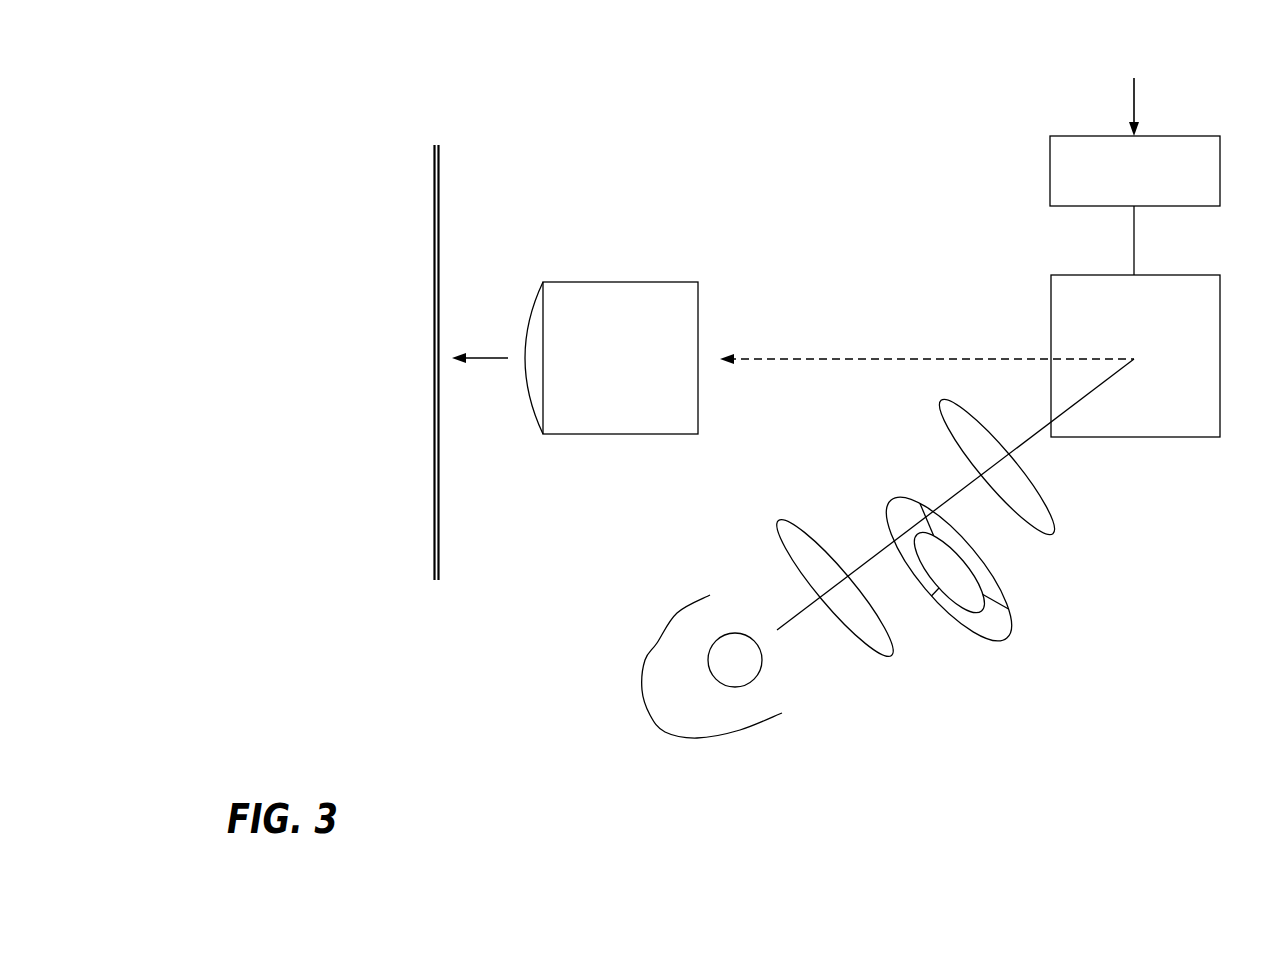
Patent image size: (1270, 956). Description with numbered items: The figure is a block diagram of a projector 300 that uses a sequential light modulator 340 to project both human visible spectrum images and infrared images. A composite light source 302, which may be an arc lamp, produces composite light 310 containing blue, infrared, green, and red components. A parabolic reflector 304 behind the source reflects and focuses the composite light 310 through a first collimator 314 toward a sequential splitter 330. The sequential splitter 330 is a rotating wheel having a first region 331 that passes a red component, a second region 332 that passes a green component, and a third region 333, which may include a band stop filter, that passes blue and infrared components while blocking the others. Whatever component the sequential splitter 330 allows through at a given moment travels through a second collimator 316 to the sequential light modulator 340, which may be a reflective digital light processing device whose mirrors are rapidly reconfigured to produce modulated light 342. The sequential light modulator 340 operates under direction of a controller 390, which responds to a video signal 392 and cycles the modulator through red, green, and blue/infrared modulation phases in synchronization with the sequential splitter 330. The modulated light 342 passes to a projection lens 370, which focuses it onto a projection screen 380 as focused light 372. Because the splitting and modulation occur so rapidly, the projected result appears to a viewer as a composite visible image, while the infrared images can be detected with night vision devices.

The projector 300 is at (510, 78).
The composite light source 302 is at (762, 664).
The parabolic reflector 304 is at (648, 658).
The composite light 310 is at (798, 612).
The first collimator 314 is at (810, 536).
The second collimator 316 is at (976, 412).
The sequential splitter 330 is at (956, 557).
The first region 331 is at (909, 508).
The second region 332 is at (992, 585).
The third region 333 is at (1006, 623).
The sequential light modulator 340 is at (1051, 307).
The modulated light 342 is at (883, 358).
The projection lens 370 is at (614, 282).
The focused light 372 is at (484, 358).
The projection screen 380 is at (440, 186).
The controller 390 is at (1050, 158).
The video signal 392 is at (1138, 118).